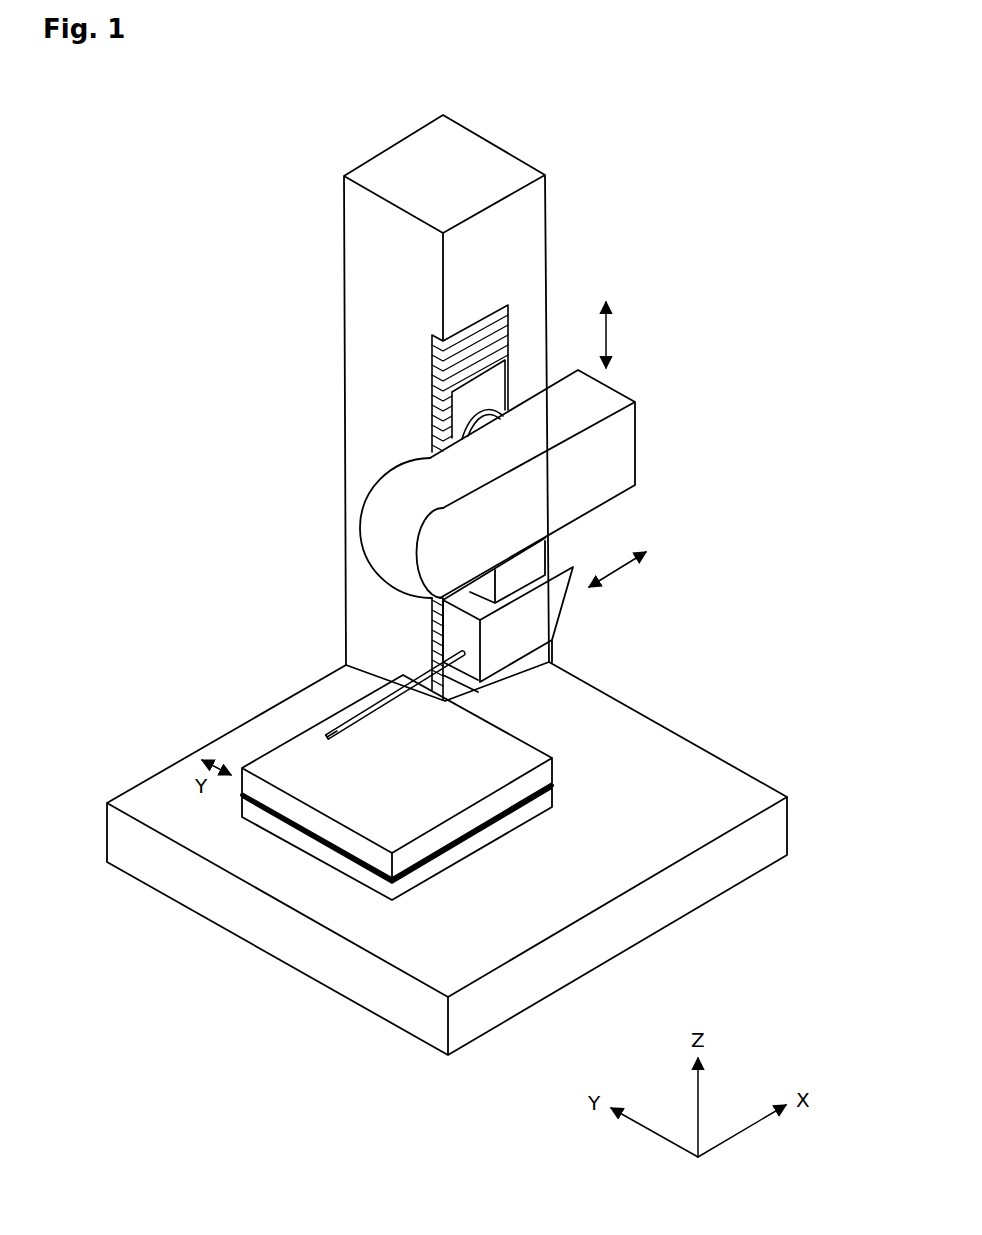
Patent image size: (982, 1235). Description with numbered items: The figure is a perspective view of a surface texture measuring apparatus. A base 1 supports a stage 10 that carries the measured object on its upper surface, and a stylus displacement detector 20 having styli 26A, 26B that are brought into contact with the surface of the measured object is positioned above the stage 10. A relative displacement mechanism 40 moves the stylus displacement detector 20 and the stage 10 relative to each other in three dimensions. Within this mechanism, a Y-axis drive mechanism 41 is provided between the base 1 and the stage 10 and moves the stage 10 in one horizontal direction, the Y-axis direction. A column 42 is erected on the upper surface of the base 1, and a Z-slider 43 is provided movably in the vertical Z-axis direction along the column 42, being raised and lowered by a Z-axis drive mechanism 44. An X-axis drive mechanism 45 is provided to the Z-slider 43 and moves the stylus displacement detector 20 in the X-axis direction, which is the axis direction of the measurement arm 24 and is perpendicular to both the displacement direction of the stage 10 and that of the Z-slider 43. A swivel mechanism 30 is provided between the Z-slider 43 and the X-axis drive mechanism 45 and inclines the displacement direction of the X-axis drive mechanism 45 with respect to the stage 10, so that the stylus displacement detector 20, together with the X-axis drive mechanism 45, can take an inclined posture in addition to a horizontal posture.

The base 1 is at (167, 783).
The stage 10 is at (338, 795).
The stylus displacement detector 20 is at (553, 625).
The measurement arm 24 is at (377, 708).
The stylus 26A is at (328, 733).
The stylus 26B is at (330, 743).
The swivel mechanism 30 is at (498, 417).
The relative displacement mechanism 40 is at (222, 438).
The Y-axis drive mechanism 41 is at (468, 848).
The column 42 is at (360, 313).
The Z-slider 43 is at (458, 408).
The Z-axis drive mechanism 44 is at (505, 322).
The X-axis drive mechanism 45 is at (628, 448).